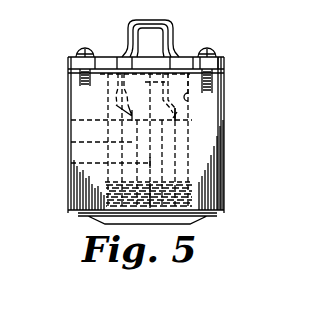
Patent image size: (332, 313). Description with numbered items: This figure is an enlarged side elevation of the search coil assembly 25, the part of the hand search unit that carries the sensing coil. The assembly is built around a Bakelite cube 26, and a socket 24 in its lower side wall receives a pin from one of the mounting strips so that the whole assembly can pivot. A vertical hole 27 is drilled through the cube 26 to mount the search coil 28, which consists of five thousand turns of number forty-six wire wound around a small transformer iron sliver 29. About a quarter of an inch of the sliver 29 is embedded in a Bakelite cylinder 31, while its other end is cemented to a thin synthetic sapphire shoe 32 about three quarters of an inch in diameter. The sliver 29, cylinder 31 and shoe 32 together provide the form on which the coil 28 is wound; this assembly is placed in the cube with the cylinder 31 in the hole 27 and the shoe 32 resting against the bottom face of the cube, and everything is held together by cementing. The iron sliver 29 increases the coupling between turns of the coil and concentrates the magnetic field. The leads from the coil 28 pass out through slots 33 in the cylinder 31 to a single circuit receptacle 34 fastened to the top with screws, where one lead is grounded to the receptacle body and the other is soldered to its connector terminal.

The socket 24 is at (149, 204).
The search coil assembly 25 is at (228, 142).
The Bakelite cube 26 is at (68, 121).
The vertical hole 27 is at (190, 97).
The search coil 28 is at (188, 194).
The transformer iron sliver 29 is at (71, 163).
The Bakelite cylinder 31 is at (71, 142).
The synthetic sapphire shoe 32 is at (207, 221).
The slots 33 is at (175, 113).
The single circuit receptacle 34 is at (132, 35).